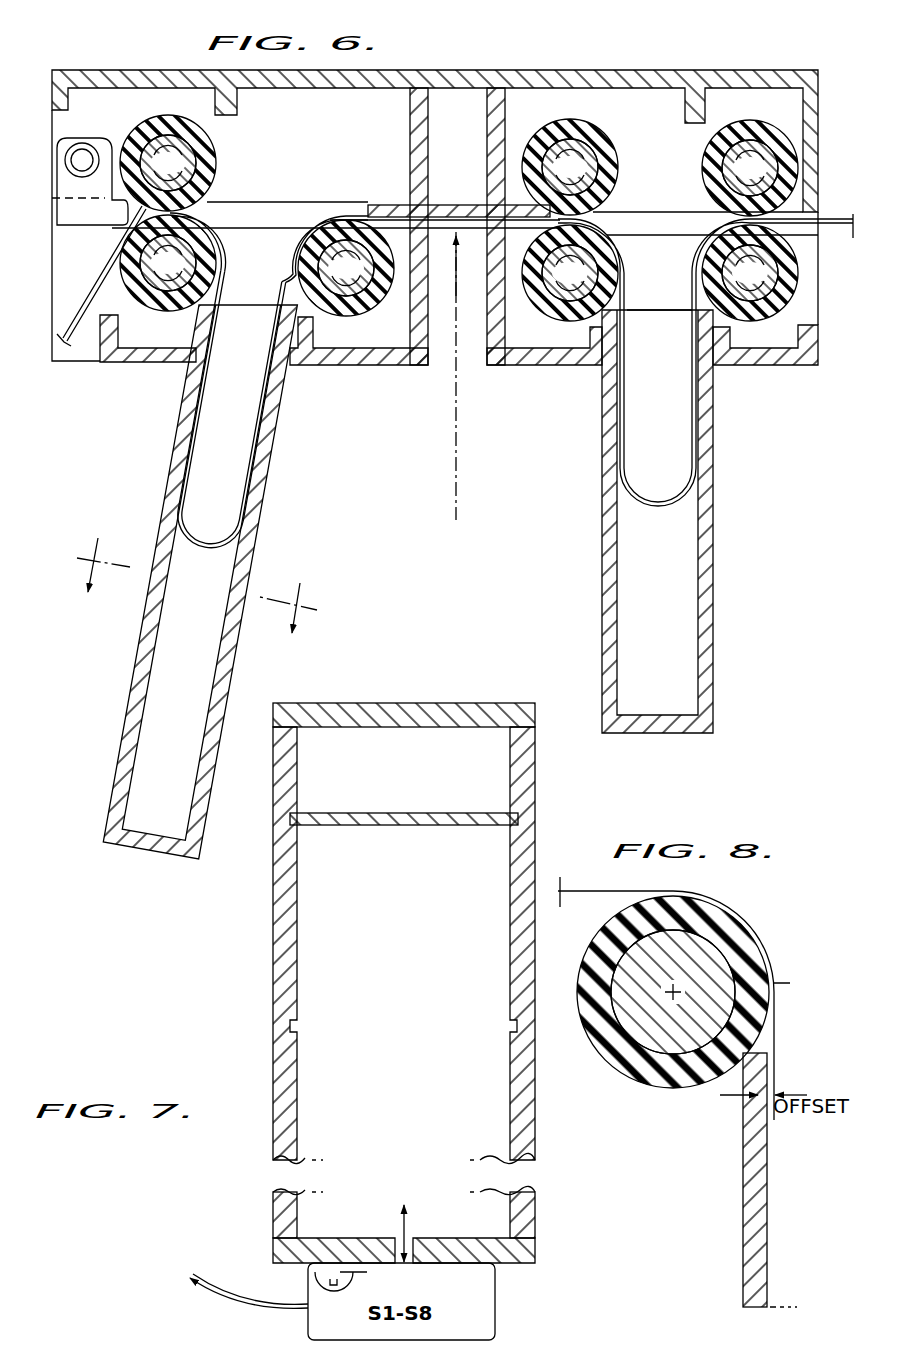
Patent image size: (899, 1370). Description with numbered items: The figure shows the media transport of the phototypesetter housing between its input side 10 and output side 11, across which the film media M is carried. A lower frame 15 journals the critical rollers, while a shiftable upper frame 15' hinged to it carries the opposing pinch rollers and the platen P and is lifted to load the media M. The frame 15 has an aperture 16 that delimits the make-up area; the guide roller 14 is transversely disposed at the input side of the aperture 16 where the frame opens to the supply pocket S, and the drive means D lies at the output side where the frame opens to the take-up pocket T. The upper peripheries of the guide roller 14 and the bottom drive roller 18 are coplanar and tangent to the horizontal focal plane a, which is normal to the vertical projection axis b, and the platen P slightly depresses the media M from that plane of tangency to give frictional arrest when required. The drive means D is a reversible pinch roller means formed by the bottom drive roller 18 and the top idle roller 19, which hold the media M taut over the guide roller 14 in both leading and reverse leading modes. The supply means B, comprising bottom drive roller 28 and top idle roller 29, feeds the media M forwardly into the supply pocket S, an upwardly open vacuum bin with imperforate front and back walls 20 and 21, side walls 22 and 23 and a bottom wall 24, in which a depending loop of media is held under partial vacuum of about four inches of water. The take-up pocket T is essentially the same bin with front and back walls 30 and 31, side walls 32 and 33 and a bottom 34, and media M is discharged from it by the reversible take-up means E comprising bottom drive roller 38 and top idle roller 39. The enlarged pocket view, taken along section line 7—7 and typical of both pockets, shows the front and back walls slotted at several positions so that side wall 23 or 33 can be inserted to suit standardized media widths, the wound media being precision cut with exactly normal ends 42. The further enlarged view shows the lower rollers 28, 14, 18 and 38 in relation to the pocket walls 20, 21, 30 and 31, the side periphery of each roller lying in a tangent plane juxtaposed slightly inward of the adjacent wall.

In FIG. 6, the input side 10 is at (36, 226).
In FIG. 6, the output side 11 is at (840, 247).
In FIG. 6, the guide roller 14 is at (346, 268).
In FIG. 8, the guide roller 14 is at (673, 992).
In FIG. 6, the lower frame 15 is at (148, 357).
In FIG. 6, the upper frame 15' is at (435, 120).
In FIG. 6, the aperture 16 is at (447, 366).
In FIG. 6, the bottom drive roller 18 is at (570, 273).
In FIG. 8, the bottom drive roller 18 is at (673, 992).
In FIG. 6, the top idle roller 19 is at (570, 167).
In FIG. 6, the front wall 20 is at (205, 595).
In FIG. 7, the front wall 20 is at (246, 982).
In FIG. 8, the front wall 20 is at (681, 1180).
In FIG. 6, the back wall 21 is at (210, 595).
In FIG. 7, the back wall 21 is at (559, 982).
In FIG. 8, the back wall 21 is at (770, 1180).
In FIG. 7, the side wall 22 is at (438, 1247).
In FIG. 6, the side wall 23 is at (205, 655).
In FIG. 7, the side wall 23 is at (404, 791).
In FIG. 6, the bottom wall 24 is at (132, 848).
In FIG. 6, the bottom drive roller 28 is at (168, 263).
In FIG. 8, the bottom drive roller 28 is at (668, 1011).
In FIG. 6, the top idle roller 29 is at (168, 163).
In FIG. 6, the front wall 30 is at (659, 536).
In FIG. 7, the front wall 30 is at (272, 896).
In FIG. 8, the front wall 30 is at (770, 1180).
In FIG. 6, the back wall 31 is at (660, 536).
In FIG. 7, the back wall 31 is at (530, 783).
In FIG. 8, the back wall 31 is at (740, 1201).
In FIG. 7, the side wall 32 is at (500, 1257).
In FIG. 7, the side wall 33 is at (400, 810).
In FIG. 6, the bottom 34 is at (672, 731).
In FIG. 6, the bottom drive roller 38 is at (750, 273).
In FIG. 8, the bottom drive roller 38 is at (601, 1067).
In FIG. 6, the top idle roller 39 is at (750, 168).
In FIG. 6, the normal ends 42 is at (445, 268).
In FIG. 6, the media supply means B is at (168, 128).
In FIG. 6, the media drive means D is at (570, 133).
In FIG. 6, the media take-up means E is at (750, 135).
In FIG. 6, the film media M is at (80, 293).
In FIG. 8, the film media M is at (614, 884).
In FIG. 6, the platen P is at (391, 202).
In FIG. 6, the supply pocket S is at (173, 595).
In FIG. 6, the take-up pocket T is at (647, 536).
In FIG. 6, the focal plane a is at (432, 226).
In FIG. 6, the projection axis b is at (458, 436).
In FIG. 6, the section line 7— 7 is at (195, 583).